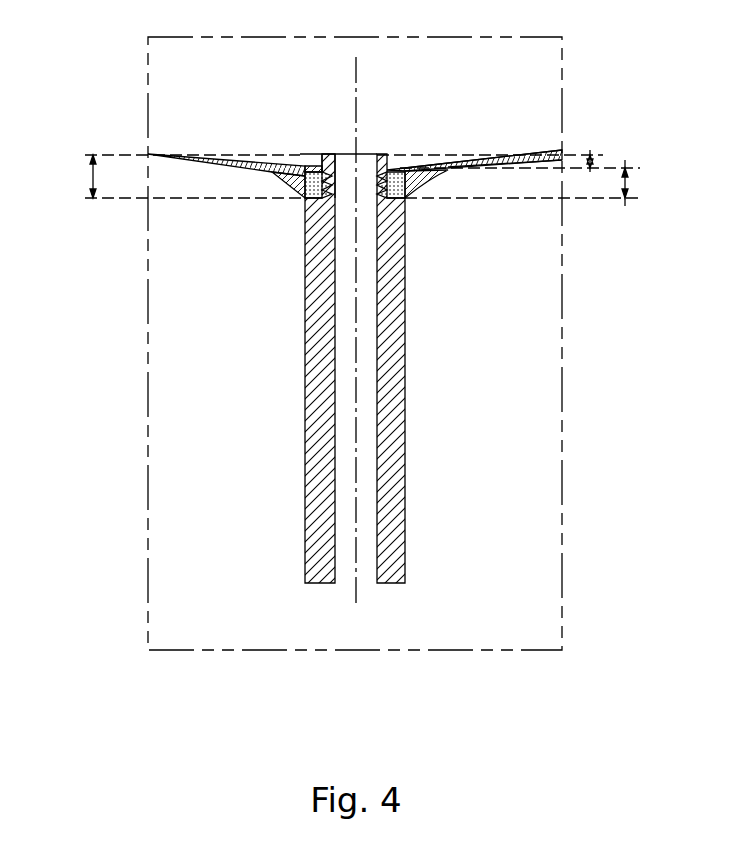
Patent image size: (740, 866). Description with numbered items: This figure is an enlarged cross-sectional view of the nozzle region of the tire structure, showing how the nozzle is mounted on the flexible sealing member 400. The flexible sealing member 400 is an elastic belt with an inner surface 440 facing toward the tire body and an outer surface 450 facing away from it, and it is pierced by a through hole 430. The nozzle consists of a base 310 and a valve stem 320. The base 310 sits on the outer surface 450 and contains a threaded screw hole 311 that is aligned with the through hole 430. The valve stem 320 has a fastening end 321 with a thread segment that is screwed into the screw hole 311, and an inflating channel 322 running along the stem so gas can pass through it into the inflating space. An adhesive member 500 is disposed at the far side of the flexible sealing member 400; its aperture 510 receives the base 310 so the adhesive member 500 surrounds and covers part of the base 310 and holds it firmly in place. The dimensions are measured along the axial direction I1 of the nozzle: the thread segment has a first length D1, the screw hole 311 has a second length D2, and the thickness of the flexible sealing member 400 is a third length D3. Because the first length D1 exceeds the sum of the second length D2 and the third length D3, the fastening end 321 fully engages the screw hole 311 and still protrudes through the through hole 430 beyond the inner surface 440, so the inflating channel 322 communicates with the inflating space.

The base 310 is at (404, 171).
The screw hole 311 is at (410, 192).
The valve stem 320 is at (305, 325).
The fastening end 321 is at (320, 157).
The inflating channel 322 is at (332, 157).
The flexible sealing member 400 is at (493, 165).
The through hole 430 is at (318, 167).
The inner surface 440 is at (520, 158).
The outer surface 450 is at (517, 170).
The adhesive member 500 is at (290, 183).
The aperture 510 is at (300, 196).
The first length D1 is at (70, 176).
The second length D2 is at (645, 183).
The third length D3 is at (592, 147).
The axial direction I1 is at (356, 348).